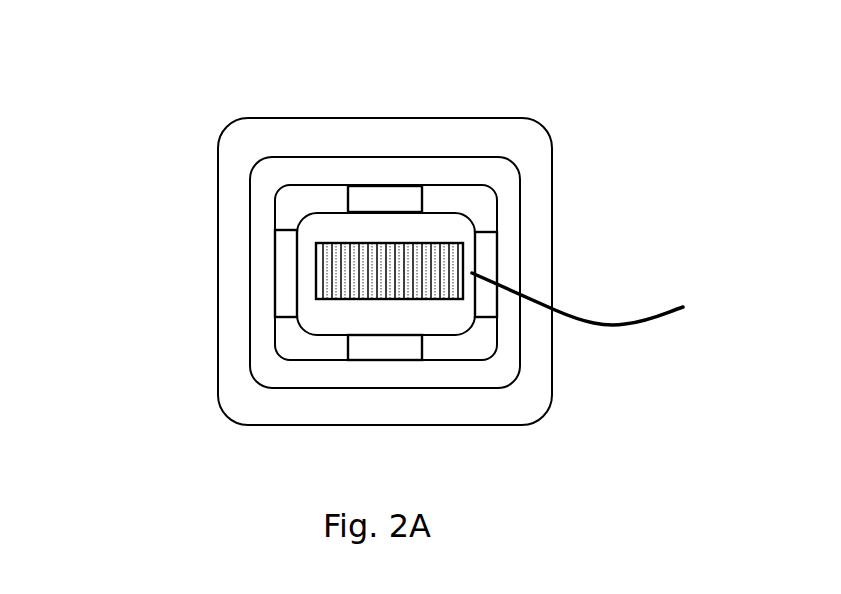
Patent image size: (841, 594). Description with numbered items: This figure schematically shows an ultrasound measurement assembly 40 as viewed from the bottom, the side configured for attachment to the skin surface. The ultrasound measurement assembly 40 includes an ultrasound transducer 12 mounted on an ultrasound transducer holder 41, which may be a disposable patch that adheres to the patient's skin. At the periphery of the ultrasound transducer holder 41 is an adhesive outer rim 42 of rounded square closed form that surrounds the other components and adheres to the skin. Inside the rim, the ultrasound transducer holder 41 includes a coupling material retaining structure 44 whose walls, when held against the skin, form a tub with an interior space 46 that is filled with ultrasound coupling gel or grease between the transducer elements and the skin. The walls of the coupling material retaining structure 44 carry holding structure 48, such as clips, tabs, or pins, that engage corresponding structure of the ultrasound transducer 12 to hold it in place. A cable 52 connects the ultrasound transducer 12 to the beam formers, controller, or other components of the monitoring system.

The ultrasound measurement assembly 40 is at (122, 68).
The ultrasound transducer holder 41 is at (569, 212).
The adhesive outer rim 42 is at (233, 289).
The coupling material retaining structure 44 is at (392, 168).
The interior space 46 is at (481, 343).
The holding structure 48 is at (278, 253).
The ultrasound transducer 12 is at (447, 215).
The cable 52 is at (584, 318).